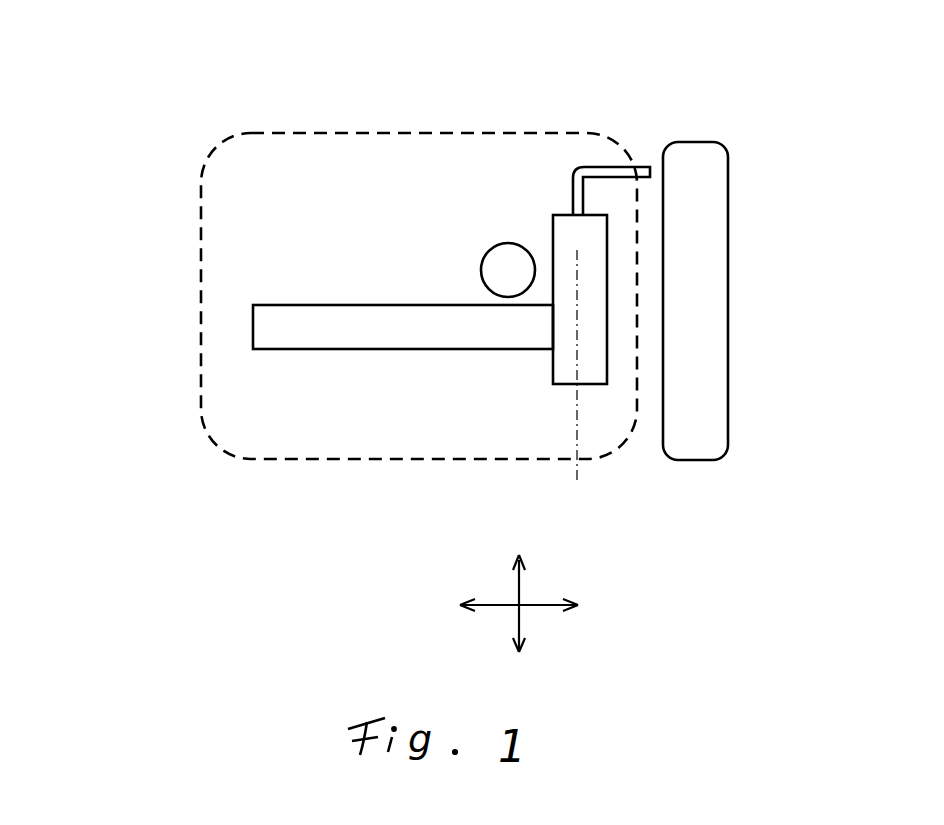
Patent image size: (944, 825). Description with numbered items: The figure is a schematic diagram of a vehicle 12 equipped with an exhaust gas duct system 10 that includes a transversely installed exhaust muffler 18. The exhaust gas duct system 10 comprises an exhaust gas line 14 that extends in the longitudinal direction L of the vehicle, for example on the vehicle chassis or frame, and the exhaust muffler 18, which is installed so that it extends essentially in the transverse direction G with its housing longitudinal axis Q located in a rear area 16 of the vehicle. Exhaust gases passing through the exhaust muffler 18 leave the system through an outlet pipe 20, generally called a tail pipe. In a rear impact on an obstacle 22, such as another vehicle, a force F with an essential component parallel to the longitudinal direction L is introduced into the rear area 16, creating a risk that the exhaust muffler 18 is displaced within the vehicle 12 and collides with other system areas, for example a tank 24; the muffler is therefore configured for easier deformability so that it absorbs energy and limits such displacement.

The exhaust gas duct system 10 is at (380, 418).
The vehicle 12 is at (372, 281).
The exhaust gas line 14 is at (295, 350).
The rear area 16 is at (636, 458).
The exhaust muffler 18 is at (607, 260).
The outlet pipe 20 is at (607, 167).
The obstacle 22 is at (728, 337).
The tank 24 is at (503, 243).